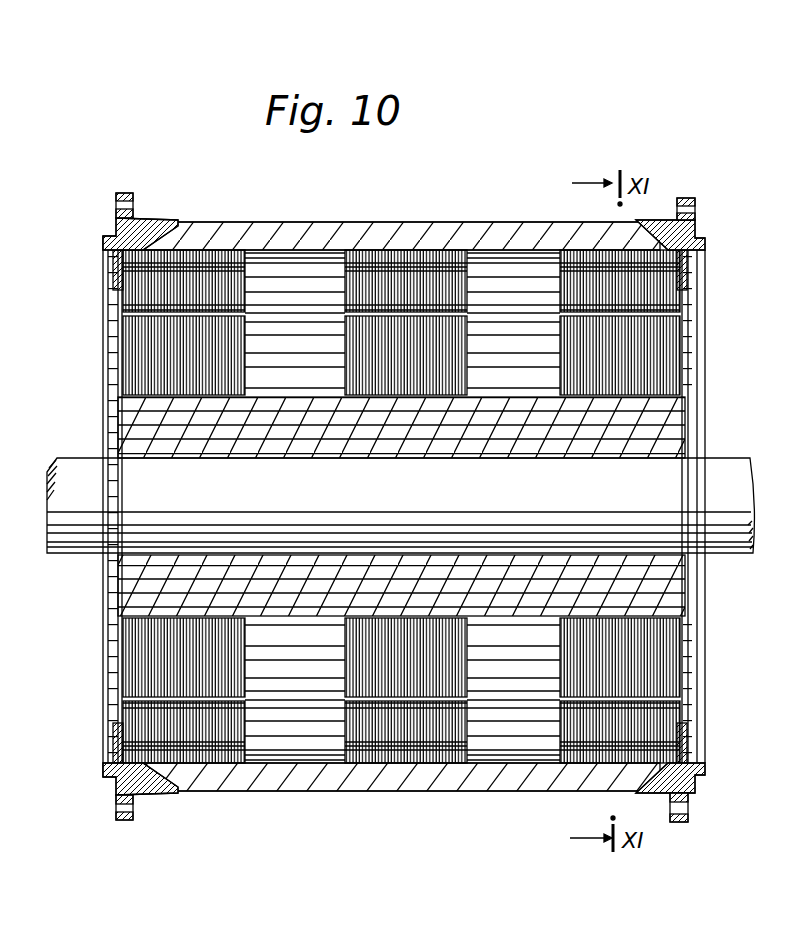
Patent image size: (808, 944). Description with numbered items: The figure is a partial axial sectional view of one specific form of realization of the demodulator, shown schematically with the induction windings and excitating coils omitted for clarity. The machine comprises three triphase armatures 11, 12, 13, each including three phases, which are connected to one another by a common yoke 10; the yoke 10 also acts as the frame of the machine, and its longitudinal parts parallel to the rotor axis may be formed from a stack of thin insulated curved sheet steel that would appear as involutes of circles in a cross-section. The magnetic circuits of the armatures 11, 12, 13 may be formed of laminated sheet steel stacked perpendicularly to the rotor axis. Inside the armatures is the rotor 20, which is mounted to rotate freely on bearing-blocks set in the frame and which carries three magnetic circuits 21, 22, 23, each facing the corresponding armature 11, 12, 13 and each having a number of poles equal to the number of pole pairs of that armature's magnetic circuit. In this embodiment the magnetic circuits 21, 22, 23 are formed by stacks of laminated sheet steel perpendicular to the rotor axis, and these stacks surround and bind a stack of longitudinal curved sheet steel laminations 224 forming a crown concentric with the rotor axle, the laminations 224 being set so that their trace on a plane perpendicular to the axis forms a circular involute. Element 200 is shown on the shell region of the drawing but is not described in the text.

The yoke 10 is at (417, 224).
The stator shell 200 is at (380, 230).
The armature 11 is at (200, 278).
The armature 12 is at (348, 280).
The armature 13 is at (572, 280).
The magnetic circuit 21 is at (143, 362).
The magnetic circuit 22 is at (442, 353).
The magnetic circuit 23 is at (650, 360).
The curved sheet steel laminations 224 is at (635, 455).
The rotor 20 is at (702, 535).